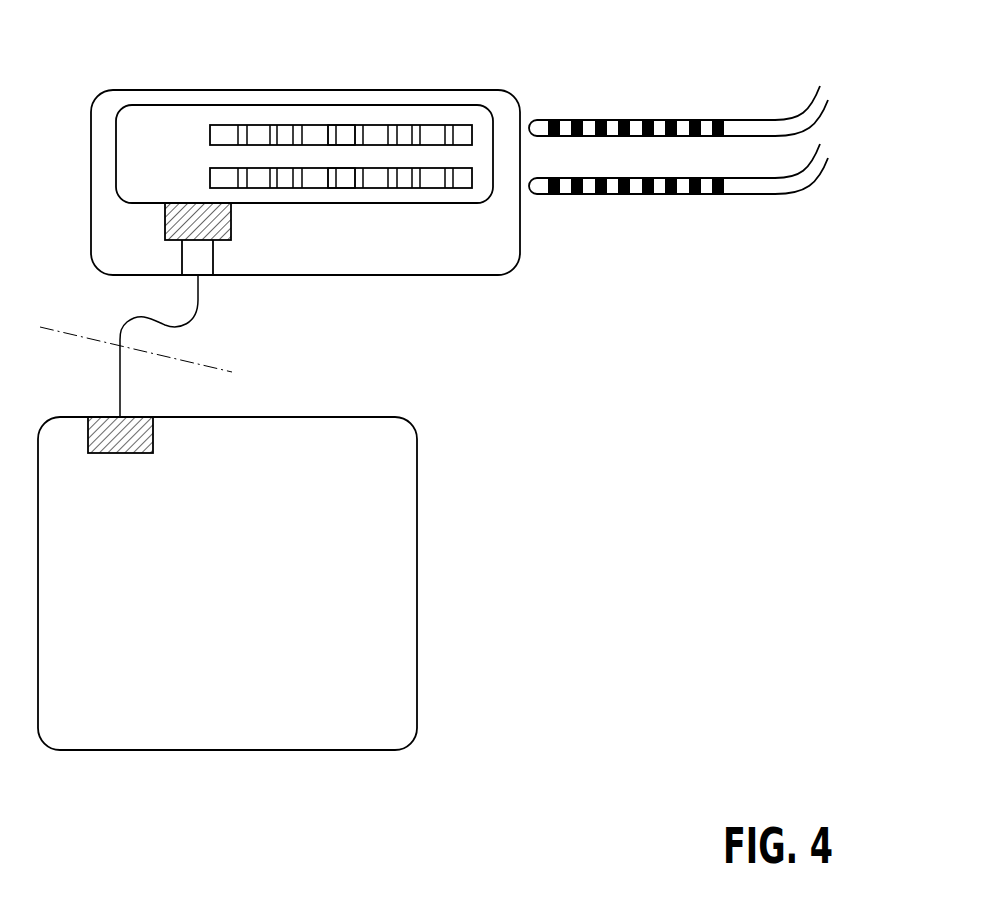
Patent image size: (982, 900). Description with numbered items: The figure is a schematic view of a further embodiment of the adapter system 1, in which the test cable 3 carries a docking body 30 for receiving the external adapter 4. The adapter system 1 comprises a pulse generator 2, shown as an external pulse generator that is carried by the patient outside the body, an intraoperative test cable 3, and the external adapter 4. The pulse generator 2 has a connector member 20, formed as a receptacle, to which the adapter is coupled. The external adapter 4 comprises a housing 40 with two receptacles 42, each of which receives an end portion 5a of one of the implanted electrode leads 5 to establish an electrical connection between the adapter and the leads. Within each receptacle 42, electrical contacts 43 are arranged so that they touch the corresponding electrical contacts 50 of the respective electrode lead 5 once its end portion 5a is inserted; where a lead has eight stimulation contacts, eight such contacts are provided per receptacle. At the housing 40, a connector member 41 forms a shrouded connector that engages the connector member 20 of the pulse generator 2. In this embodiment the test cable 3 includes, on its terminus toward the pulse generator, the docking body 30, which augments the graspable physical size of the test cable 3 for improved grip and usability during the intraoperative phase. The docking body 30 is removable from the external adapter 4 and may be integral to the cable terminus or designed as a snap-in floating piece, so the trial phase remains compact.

The adapter system 1 is at (503, 474).
The pulse generator 2 is at (205, 625).
The test cable 3 is at (207, 300).
The external adapter 4 is at (130, 163).
The electrode lead 5 is at (762, 118).
The end portion 5a is at (568, 126).
The connector member 20 is at (125, 453).
The docking body 30 is at (233, 88).
The housing 40 is at (155, 118).
The connector member 41 is at (165, 226).
The receptacle 42 is at (345, 128).
The electrical contacts 43 is at (334, 128).
The electrical contacts 50 is at (693, 118).